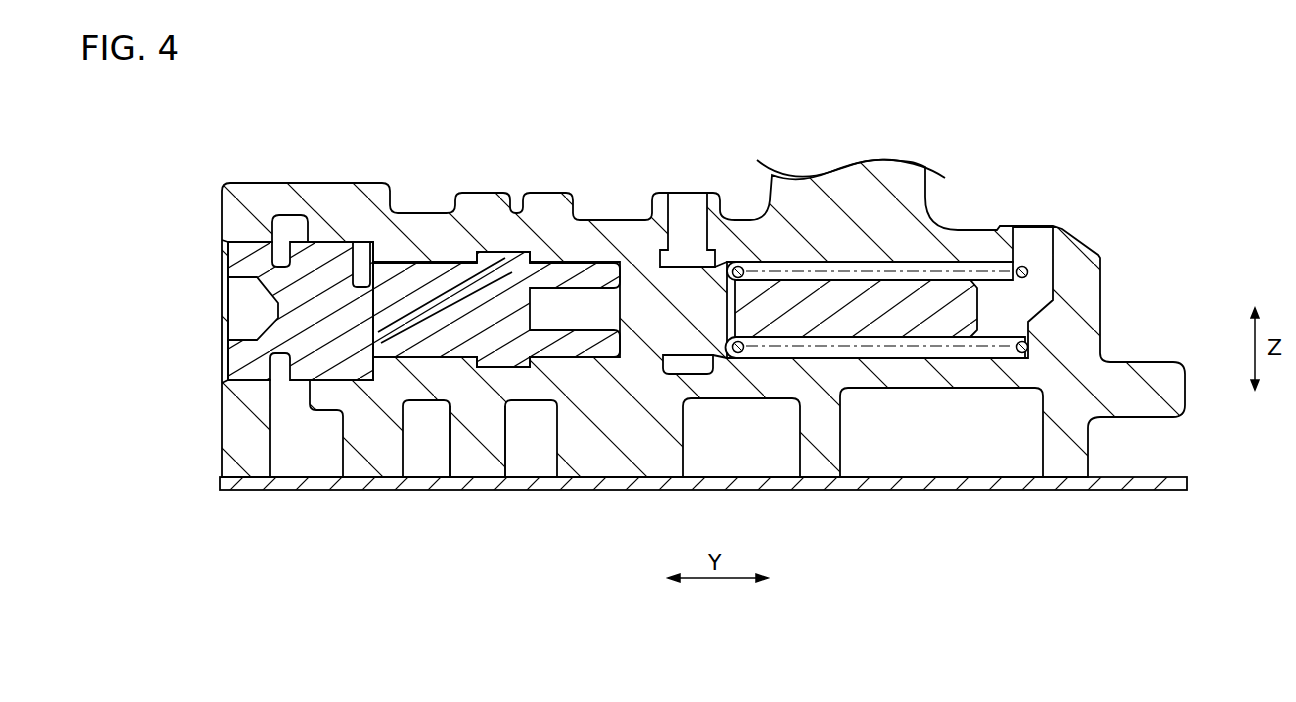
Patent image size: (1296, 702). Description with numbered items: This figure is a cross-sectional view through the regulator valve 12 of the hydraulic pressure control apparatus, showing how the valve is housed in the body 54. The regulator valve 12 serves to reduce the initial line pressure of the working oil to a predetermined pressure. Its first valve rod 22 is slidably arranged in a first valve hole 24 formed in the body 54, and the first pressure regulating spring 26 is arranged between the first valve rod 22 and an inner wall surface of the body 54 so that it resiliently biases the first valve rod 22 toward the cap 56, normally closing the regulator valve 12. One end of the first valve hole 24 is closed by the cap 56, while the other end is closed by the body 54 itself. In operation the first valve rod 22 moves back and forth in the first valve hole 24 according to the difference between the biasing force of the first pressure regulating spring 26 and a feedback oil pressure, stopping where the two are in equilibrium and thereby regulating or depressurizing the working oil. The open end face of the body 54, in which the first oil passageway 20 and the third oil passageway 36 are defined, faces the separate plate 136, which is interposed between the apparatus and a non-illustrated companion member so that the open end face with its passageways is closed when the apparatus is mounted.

The regulator valve 12 is at (390, 113).
The body 54 is at (322, 190).
The cap 56 is at (238, 358).
The first oil passageway 20 is at (556, 450).
The third oil passageway 36 is at (448, 450).
The first valve rod 22 is at (720, 290).
The first valve hole 24 is at (890, 348).
The first pressure regulating spring 26 is at (988, 268).
The separate plate 136 is at (972, 490).